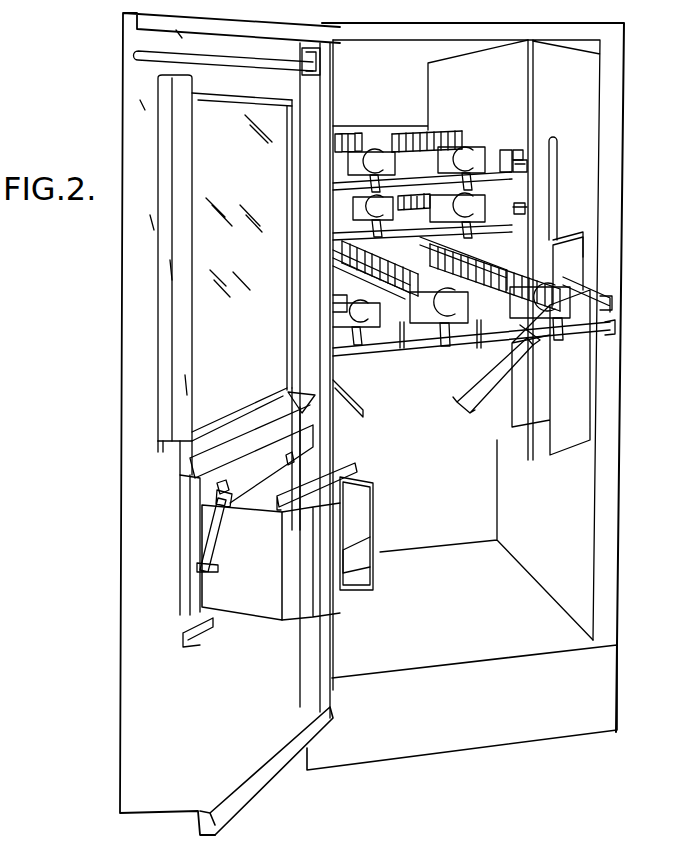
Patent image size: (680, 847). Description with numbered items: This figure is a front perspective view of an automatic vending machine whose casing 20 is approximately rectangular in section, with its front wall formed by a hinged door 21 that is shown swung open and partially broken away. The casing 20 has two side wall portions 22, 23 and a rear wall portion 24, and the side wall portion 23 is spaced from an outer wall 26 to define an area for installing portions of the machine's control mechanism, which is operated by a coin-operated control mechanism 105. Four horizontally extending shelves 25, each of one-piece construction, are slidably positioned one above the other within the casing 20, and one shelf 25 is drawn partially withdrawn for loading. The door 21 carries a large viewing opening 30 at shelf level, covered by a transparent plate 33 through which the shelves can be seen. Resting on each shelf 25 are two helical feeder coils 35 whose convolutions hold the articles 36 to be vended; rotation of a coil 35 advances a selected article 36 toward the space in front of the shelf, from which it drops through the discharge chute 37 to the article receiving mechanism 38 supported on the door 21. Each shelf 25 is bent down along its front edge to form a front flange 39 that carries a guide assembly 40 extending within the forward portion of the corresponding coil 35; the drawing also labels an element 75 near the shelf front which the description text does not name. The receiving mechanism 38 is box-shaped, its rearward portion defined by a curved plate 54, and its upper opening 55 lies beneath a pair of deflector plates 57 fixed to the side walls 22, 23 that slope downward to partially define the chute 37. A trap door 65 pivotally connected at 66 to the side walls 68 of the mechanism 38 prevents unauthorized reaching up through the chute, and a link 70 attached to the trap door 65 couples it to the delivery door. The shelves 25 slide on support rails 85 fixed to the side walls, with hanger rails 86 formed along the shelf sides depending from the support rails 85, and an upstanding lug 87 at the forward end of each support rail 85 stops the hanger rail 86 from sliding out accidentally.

The casing 20 is at (484, 757).
The hinged door 21 is at (122, 431).
The side wall portion 22 is at (303, 764).
The side wall portion 23 is at (534, 88).
The rear wall portion 24 is at (420, 497).
The shelf 25 is at (619, 334).
The outer wall 26 is at (620, 111).
The viewing opening 30 is at (240, 104).
The transparent plate 33 is at (202, 306).
The helical feeder coil 35 is at (375, 150).
The article 36 is at (345, 132).
The discharge chute 37 is at (476, 420).
The article receiving mechanism 38 is at (265, 630).
The front flange 39 is at (612, 335).
The guide assembly 40 is at (447, 352).
The curved plate 54 is at (360, 567).
The opening 55 is at (331, 470).
The deflector plate 57 is at (353, 401).
The trap door 65 is at (260, 470).
The pivotal connection 66 is at (219, 483).
The side wall 68 is at (210, 515).
The link 70 is at (218, 540).
The support post 75 is at (402, 349).
The support rail 85 is at (528, 165).
The hanger rail 86 is at (500, 150).
The upstanding lug 87 is at (515, 150).
The coin-operated control mechanism 105 is at (570, 247).